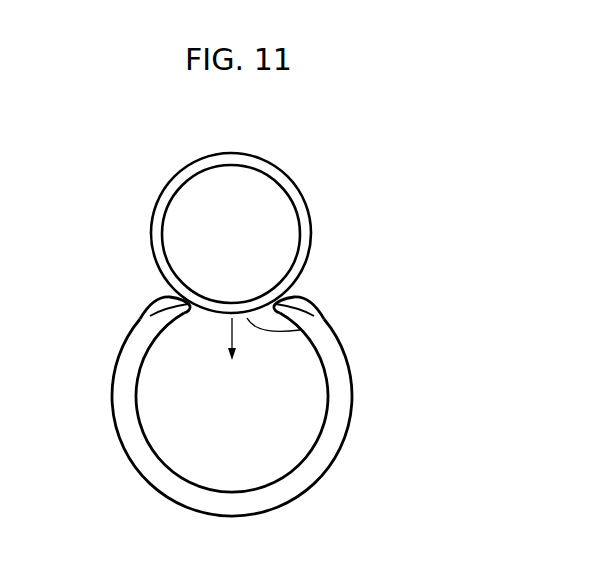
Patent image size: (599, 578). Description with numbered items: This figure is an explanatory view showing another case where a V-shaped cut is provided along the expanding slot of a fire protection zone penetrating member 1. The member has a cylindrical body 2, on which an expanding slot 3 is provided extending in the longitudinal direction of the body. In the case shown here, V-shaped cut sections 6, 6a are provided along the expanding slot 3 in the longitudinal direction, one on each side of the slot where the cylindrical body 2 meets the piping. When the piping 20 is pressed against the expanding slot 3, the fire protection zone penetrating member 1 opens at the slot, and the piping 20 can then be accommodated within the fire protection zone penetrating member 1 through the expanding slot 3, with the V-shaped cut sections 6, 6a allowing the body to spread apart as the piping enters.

The fire protection zone penetrating member 1 is at (243, 391).
The cylindrical body 2 is at (352, 398).
The expanding slot 3 is at (300, 330).
The V-shaped cut section 6 is at (152, 305).
The V-shaped cut section 6a is at (300, 300).
The piping 20 is at (283, 182).